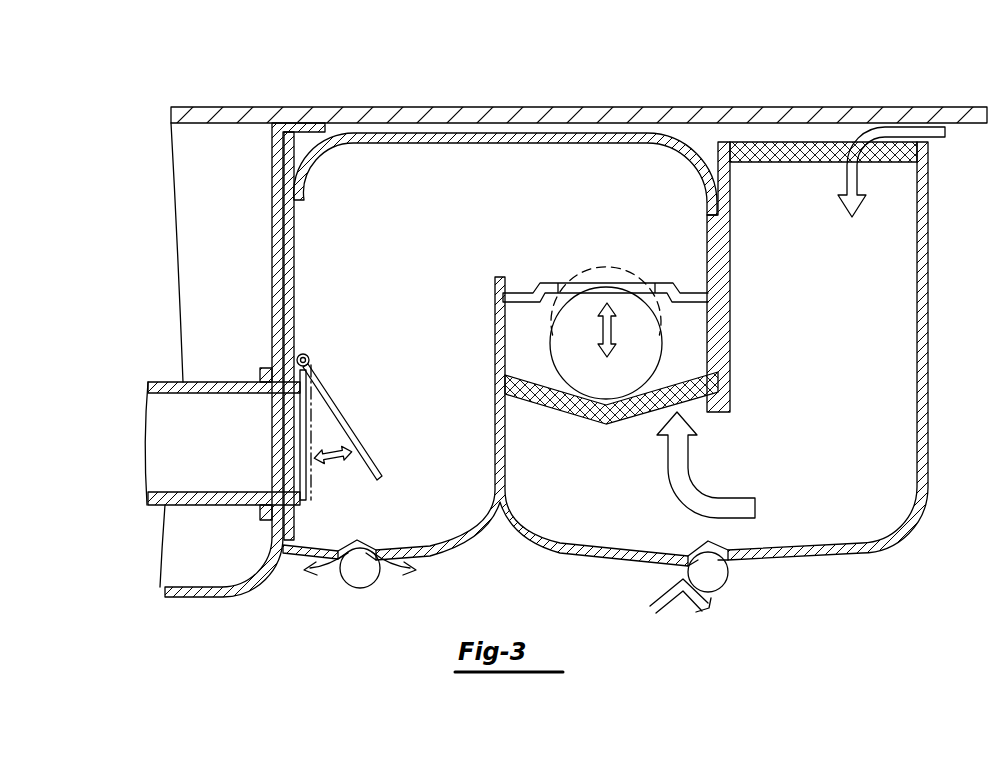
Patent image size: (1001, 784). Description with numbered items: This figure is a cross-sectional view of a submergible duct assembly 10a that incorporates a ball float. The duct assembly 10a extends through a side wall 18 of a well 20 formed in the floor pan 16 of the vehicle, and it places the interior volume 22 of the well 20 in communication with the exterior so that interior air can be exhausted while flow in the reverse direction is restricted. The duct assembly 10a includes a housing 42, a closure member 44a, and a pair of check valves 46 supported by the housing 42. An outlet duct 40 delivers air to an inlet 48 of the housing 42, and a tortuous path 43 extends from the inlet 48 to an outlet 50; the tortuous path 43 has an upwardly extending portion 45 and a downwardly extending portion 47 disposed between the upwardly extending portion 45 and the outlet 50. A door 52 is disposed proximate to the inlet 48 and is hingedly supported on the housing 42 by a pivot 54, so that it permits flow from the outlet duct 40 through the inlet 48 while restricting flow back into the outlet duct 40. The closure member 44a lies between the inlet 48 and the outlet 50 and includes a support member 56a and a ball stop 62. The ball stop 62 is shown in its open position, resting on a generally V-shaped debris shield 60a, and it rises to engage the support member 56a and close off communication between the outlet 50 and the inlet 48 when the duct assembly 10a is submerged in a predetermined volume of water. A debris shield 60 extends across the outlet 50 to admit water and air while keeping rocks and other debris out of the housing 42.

The duct assembly 10a is at (557, 89).
The floor pan 16 is at (950, 108).
The side wall 18 is at (272, 176).
The well 20 is at (180, 602).
The interior volume 22 is at (212, 233).
The outlet duct 40 is at (163, 385).
The housing 42 is at (944, 318).
The tortuous path 43 is at (418, 175).
The closure member 44a is at (624, 244).
The upwardly extending portion 45 is at (460, 355).
The check valves 46 is at (350, 580).
The downwardly extending portion 47 is at (635, 232).
The inlet 48 is at (300, 470).
The outlet 50 is at (763, 135).
The door 52 is at (340, 395).
The pivot 54 is at (310, 357).
The support member 56a is at (522, 290).
The debris shield 60 is at (768, 162).
The debris shield 60a is at (545, 400).
The ball stop 62 is at (645, 360).